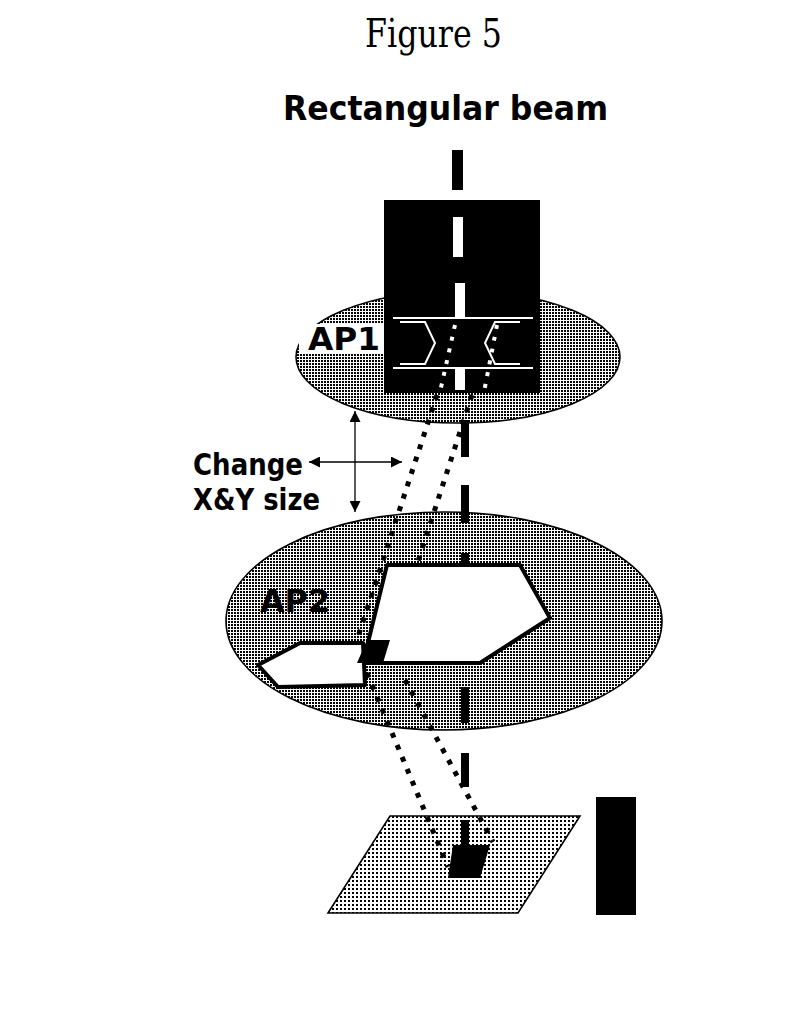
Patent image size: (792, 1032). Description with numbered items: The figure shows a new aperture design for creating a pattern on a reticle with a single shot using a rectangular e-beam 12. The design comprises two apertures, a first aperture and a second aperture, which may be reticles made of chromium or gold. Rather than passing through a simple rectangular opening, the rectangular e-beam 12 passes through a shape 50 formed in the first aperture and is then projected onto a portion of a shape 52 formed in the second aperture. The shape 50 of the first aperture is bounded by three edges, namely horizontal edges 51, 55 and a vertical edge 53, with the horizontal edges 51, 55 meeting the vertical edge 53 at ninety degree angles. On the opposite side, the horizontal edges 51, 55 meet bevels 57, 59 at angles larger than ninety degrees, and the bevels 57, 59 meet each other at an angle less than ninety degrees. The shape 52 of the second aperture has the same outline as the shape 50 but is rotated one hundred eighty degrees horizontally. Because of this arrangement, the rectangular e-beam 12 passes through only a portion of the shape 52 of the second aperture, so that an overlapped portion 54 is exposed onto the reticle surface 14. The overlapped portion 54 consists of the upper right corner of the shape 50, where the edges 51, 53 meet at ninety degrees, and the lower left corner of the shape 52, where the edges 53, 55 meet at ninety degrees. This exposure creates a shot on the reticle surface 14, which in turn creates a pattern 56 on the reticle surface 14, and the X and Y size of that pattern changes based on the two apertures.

The rectangular e-beam 12 is at (500, 214).
The reticle surface 14 is at (405, 860).
The shape of AP1 50 is at (475, 312).
The horizontal edge 51 is at (326, 639).
The shape of AP2 52 is at (498, 603).
The vertical edge 53 is at (388, 645).
The overlapped portion 54 is at (367, 643).
The horizontal edge 55 is at (425, 667).
The pattern 56 is at (639, 848).
The bevel 57 is at (408, 356).
The bevel 59 is at (412, 331).